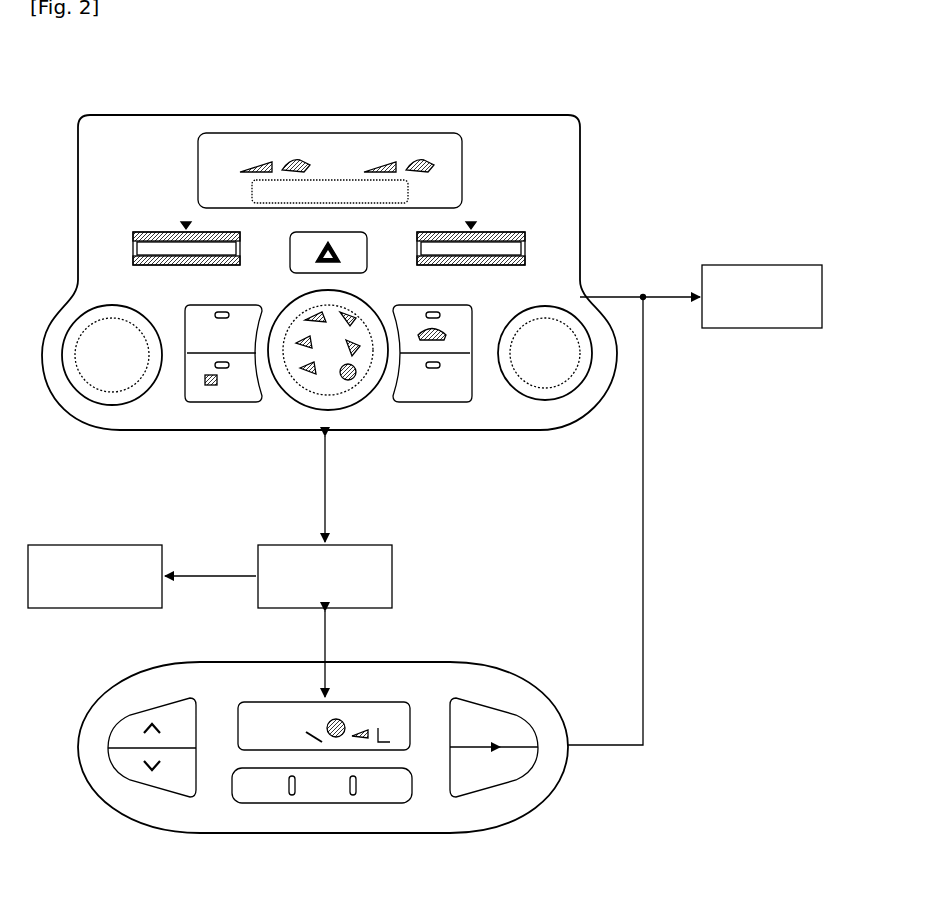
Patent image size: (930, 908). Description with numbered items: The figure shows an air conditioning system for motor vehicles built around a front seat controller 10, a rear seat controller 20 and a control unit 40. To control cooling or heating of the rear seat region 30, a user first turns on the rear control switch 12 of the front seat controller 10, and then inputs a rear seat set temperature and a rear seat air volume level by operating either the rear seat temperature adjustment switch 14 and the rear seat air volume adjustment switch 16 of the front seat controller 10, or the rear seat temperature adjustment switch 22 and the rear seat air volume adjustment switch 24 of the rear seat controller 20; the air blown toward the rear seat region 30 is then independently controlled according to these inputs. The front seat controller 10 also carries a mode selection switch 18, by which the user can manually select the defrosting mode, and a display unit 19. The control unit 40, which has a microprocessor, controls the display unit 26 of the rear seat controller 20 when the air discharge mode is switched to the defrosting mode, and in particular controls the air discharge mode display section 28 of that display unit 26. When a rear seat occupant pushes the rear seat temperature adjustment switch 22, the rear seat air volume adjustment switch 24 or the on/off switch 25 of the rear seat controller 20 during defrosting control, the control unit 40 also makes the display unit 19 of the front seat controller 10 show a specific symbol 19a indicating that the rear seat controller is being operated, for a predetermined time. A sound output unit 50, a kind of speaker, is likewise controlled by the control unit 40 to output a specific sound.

The front seat controller 10 is at (495, 128).
The rear control switch 12 is at (412, 393).
The rear seat temperature adjustment switch 14 is at (505, 232).
The rear seat air volume adjustment switch 16 is at (553, 305).
The mode selection switch 18 is at (303, 393).
The display unit 19 is at (393, 142).
The specific symbol 19a is at (370, 178).
The rear seat controller 20 is at (328, 815).
The rear seat temperature adjustment switch 22 is at (112, 740).
The rear seat air volume adjustment switch 24 is at (508, 730).
The on/off switch 25 is at (403, 795).
The display unit 26 is at (398, 708).
The air discharge mode display section 28 is at (336, 718).
The rear seat region 30 is at (758, 328).
The control unit 40 is at (392, 576).
The sound output unit 50 is at (96, 545).